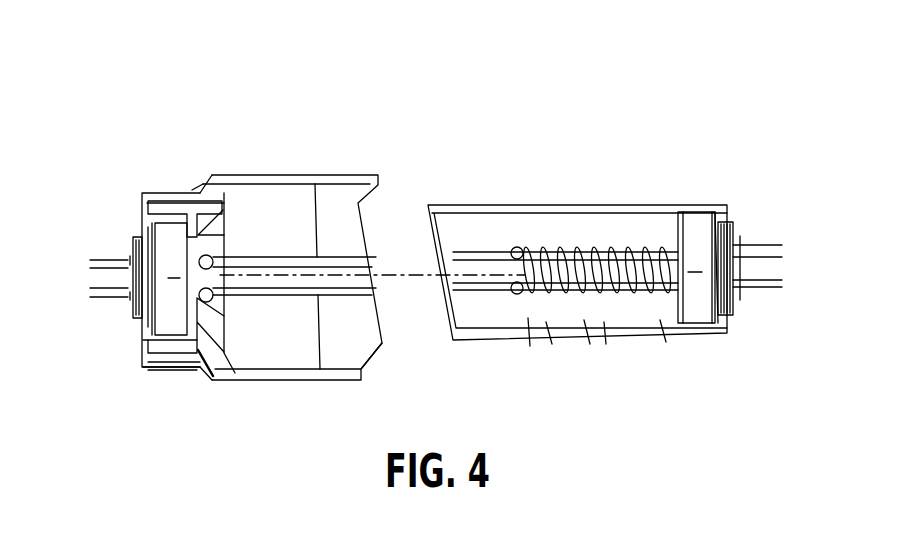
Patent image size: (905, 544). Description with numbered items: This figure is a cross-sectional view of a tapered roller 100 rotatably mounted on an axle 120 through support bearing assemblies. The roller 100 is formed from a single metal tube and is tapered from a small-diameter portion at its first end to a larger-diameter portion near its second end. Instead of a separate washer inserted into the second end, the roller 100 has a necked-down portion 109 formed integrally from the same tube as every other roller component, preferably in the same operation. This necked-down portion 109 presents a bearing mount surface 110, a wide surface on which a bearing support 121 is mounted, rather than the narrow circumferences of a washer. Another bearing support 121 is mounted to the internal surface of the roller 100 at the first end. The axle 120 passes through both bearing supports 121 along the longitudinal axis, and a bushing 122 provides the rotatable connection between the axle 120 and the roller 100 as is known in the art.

The tapered roller 100 is at (510, 205).
The necked-down portion 109 is at (187, 192).
The bearing mount surface 110 is at (162, 195).
The axle 120 is at (281, 257).
The bearing support 121 is at (152, 368).
The bushing 122 is at (135, 228).